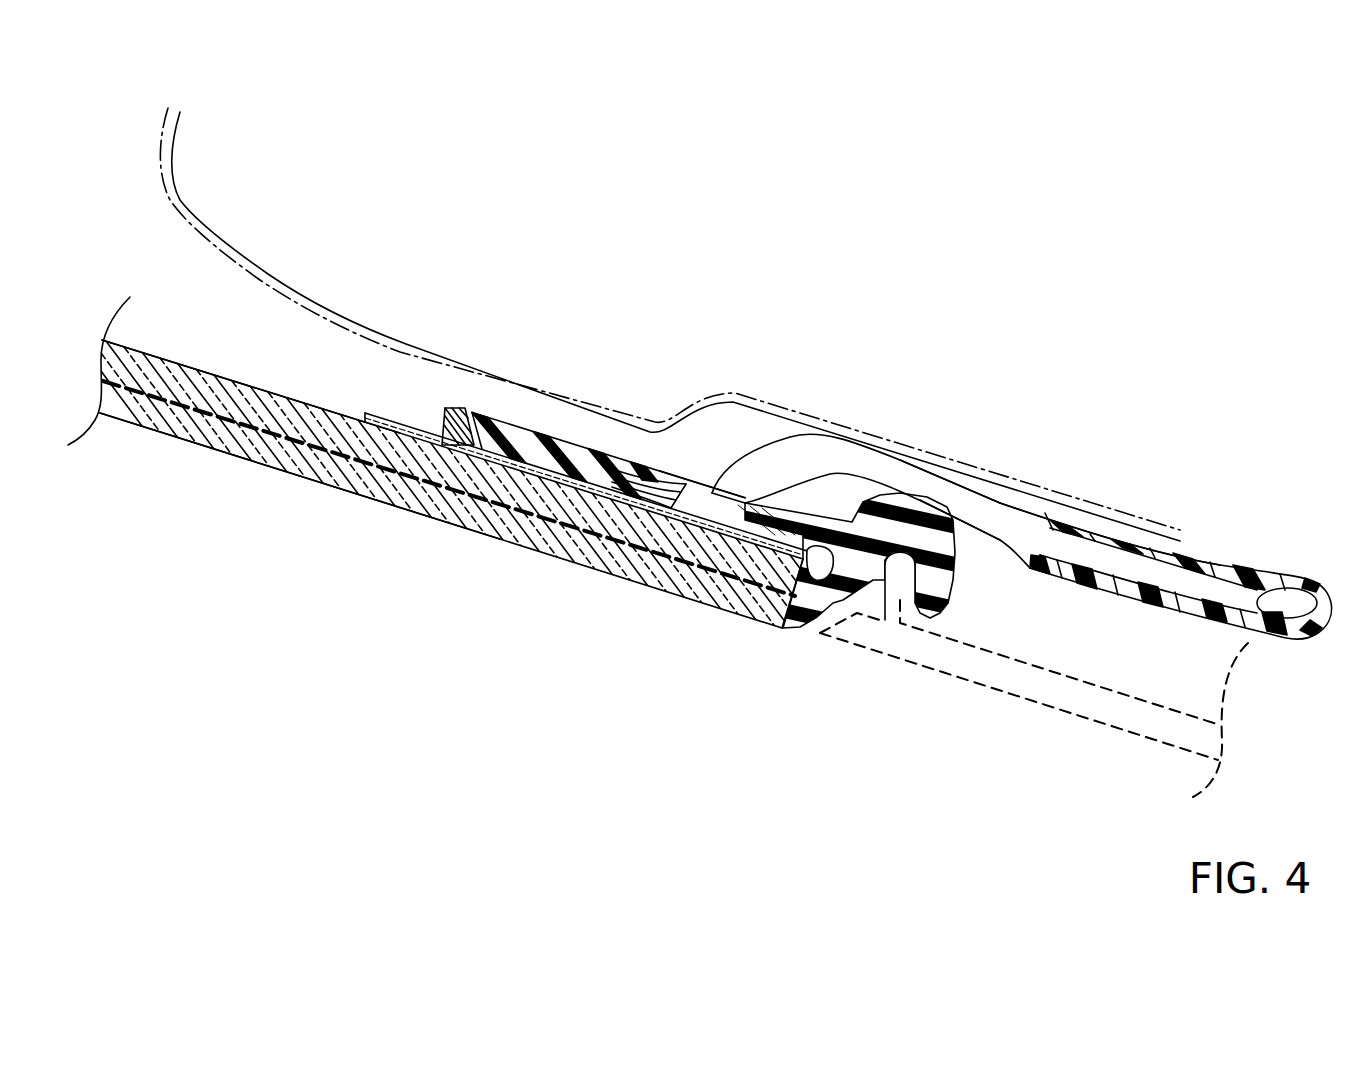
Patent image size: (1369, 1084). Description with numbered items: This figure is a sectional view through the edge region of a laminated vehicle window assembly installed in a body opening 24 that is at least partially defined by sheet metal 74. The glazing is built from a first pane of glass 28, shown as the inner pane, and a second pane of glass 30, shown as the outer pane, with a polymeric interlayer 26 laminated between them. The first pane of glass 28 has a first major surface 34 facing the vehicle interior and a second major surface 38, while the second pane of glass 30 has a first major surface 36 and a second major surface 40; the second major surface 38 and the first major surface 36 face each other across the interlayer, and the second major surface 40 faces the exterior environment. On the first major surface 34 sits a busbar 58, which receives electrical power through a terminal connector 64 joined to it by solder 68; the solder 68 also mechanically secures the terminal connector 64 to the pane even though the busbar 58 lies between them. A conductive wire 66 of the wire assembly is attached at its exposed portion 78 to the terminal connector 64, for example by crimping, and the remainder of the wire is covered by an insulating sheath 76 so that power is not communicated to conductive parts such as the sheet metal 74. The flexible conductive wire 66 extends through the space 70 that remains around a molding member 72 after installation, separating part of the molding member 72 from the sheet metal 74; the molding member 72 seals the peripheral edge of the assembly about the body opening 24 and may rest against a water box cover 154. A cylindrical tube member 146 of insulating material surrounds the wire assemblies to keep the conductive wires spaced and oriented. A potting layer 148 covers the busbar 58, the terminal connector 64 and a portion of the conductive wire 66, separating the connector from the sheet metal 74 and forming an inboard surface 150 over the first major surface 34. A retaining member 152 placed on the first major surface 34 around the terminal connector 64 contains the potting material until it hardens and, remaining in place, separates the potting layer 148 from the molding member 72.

The body opening 24 is at (701, 456).
The polymeric interlayer 26 is at (260, 428).
The first pane of glass 28 is at (243, 388).
The second pane of glass 30 is at (233, 460).
The first major surface 34 is at (200, 378).
The first major surface 36 is at (193, 408).
The second major surface 38 is at (147, 380).
The second major surface 40 is at (130, 425).
The busbar 58 is at (625, 482).
The terminal connector 64 is at (645, 485).
The conductive wire 66 is at (780, 447).
The solder 68 is at (672, 500).
The space 70 is at (627, 478).
The molding member 72 is at (937, 598).
The sheet metal 74 is at (403, 352).
The insulating sheath 76 is at (947, 487).
The exposed portion 78 is at (657, 505).
The cylindrical tube member 146 is at (1213, 572).
The potting layer 148 is at (570, 435).
The inboard surface 150 is at (513, 420).
The retaining member 152 is at (443, 420).
The water box cover 154 is at (1007, 697).